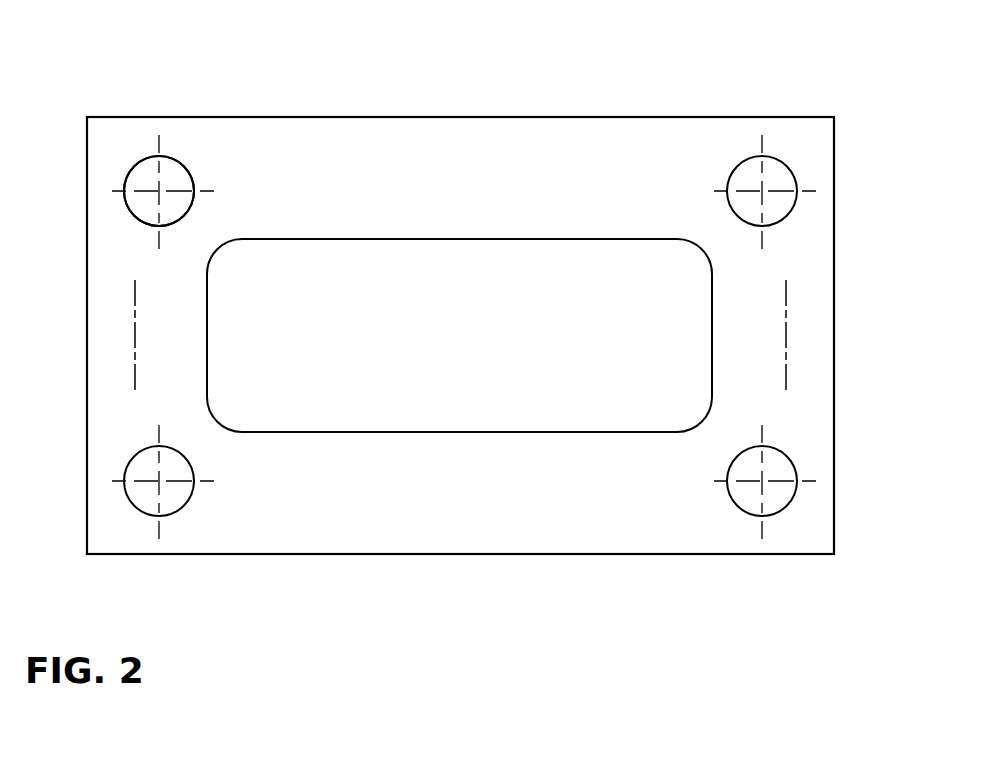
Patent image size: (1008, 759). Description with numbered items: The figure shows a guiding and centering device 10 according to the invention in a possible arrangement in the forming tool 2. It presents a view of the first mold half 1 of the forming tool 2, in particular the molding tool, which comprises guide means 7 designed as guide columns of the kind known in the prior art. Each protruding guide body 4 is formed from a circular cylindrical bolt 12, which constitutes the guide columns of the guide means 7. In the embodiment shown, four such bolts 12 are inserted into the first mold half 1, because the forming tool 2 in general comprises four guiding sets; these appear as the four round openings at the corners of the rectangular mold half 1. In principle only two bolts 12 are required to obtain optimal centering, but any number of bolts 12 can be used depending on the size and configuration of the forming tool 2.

The guiding and centering device 10 is at (280, 107).
The first mold half 1 is at (705, 148).
The forming tool 2 is at (655, 111).
The guide means 7 is at (130, 162).
The protruding guide body 4 is at (166, 145).
The circular cylindrical bolt 12 is at (178, 178).